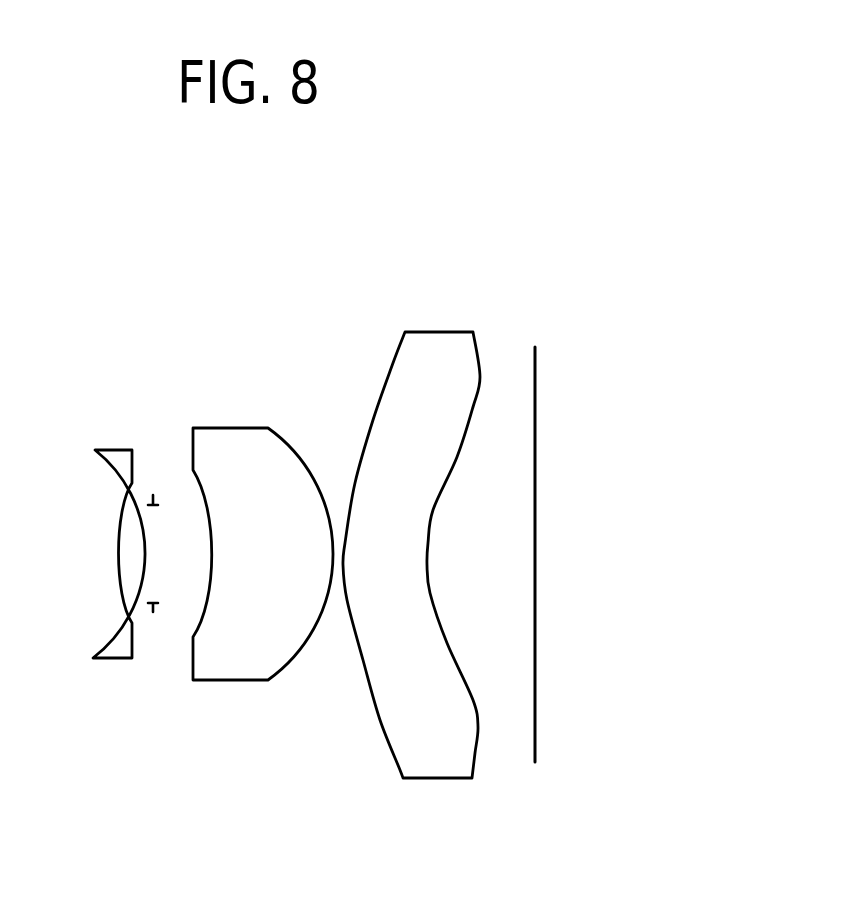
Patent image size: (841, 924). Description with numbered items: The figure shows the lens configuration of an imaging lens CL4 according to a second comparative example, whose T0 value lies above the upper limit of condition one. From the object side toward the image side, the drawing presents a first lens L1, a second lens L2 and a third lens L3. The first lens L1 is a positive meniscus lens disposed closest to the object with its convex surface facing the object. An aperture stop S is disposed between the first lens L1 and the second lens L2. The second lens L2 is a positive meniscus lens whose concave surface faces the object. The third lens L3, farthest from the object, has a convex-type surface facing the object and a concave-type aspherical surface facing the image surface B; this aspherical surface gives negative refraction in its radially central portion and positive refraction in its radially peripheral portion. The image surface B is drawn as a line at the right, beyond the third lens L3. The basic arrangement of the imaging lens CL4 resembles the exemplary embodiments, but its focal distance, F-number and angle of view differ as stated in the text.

The imaging lens CL4 is at (603, 345).
The first lens L1 is at (105, 658).
The second lens L2 is at (223, 680).
The third lens L3 is at (435, 778).
The aperture stop S is at (157, 496).
The image surface B is at (535, 380).